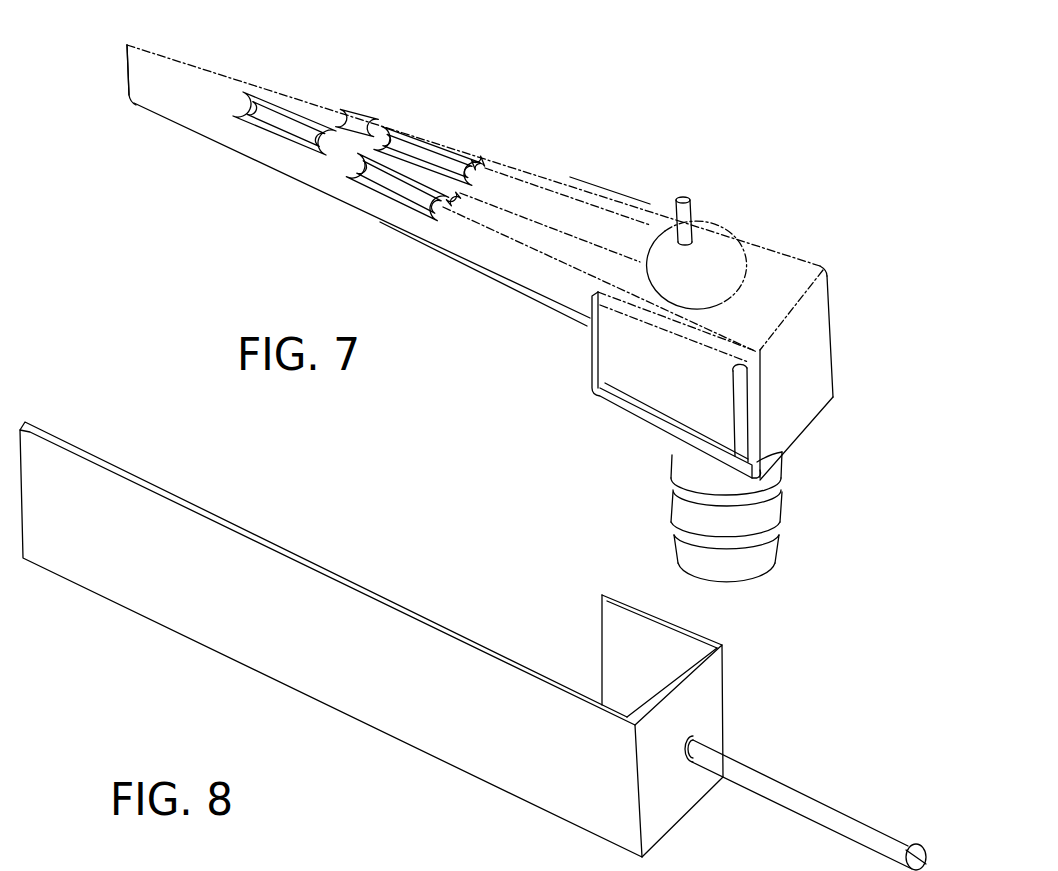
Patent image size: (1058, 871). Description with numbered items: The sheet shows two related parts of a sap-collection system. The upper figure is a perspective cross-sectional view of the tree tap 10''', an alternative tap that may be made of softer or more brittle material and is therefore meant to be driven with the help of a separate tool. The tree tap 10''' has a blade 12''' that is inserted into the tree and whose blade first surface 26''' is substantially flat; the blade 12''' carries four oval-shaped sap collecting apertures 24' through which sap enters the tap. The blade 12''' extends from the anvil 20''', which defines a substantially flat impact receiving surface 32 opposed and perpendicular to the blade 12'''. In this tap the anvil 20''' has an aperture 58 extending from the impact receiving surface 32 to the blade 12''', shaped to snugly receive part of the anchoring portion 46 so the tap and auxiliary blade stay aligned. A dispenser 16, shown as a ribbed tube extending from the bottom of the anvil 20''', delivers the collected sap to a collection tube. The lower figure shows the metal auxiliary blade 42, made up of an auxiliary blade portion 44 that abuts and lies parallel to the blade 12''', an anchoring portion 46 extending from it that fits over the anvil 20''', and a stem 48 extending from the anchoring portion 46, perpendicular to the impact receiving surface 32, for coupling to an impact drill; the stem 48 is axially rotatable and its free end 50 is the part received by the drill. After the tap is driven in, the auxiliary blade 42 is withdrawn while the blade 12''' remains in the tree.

In FIG. 7, the tree tap 10''' is at (468, 198).
In FIG. 7, the blade 12''' is at (378, 86).
In FIG. 7, the anvil 20''' is at (737, 305).
In FIG. 7, the sap collecting aperture 24' is at (405, 246).
In FIG. 7, the blade first surface 26''' is at (126, 109).
In FIG. 7, the impact receiving surface 32 is at (802, 347).
In FIG. 7, the aperture 58 is at (758, 350).
In FIG. 7, the dispenser 16 is at (677, 475).
In FIG. 8, the auxiliary blade 42 is at (371, 639).
In FIG. 8, the auxiliary blade portion 44 is at (302, 655).
In FIG. 8, the anchoring portion 46 is at (628, 648).
In FIG. 8, the stem 48 is at (785, 787).
In FIG. 8, the shaft end 50 is at (853, 860).